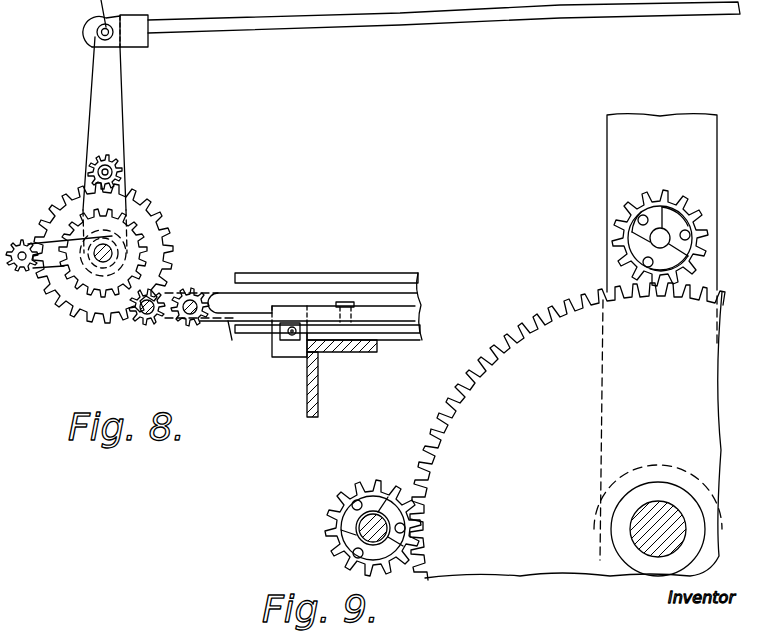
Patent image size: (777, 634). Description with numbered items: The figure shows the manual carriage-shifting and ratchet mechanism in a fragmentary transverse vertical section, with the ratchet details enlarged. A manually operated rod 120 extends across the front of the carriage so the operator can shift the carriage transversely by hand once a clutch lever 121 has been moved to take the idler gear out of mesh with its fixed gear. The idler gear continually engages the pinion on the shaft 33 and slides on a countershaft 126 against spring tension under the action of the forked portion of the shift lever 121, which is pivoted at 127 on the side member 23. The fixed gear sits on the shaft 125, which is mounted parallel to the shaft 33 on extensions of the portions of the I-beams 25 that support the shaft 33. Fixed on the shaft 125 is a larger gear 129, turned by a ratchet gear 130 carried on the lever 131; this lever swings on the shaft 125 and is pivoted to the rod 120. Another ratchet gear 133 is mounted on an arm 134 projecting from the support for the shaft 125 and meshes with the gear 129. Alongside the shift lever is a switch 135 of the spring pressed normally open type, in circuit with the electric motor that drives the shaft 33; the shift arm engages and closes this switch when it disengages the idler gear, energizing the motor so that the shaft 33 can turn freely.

In FIG. 8, the side member 23 is at (320, 396).
In FIG. 8, the I-beams 25 is at (397, 281).
In FIG. 8, the shaft 33 is at (196, 299).
In FIG. 8, the manually operated rod 120 is at (407, 22).
In FIG. 8, the clutch lever 121 is at (258, 305).
In FIG. 8, the shaft 125 is at (190, 322).
In FIG. 9, the shaft 125 is at (662, 540).
In FIG. 8, the countershaft 126 is at (150, 322).
In FIG. 8, the pivot 127 is at (108, 268).
In FIG. 8, the larger gear 129 is at (157, 211).
In FIG. 9, the larger gear 129 is at (530, 322).
In FIG. 8, the ratchet gear 130 is at (117, 160).
In FIG. 9, the ratchet gear 130 is at (618, 198).
In FIG. 8, the lever 131 is at (117, 118).
In FIG. 9, the lever 131 is at (607, 140).
In FIG. 8, the ratchet gear 133 is at (23, 241).
In FIG. 9, the ratchet gear 133 is at (342, 510).
In FIG. 8, the arm 134 is at (38, 270).
In FIG. 8, the switch 135 is at (291, 340).